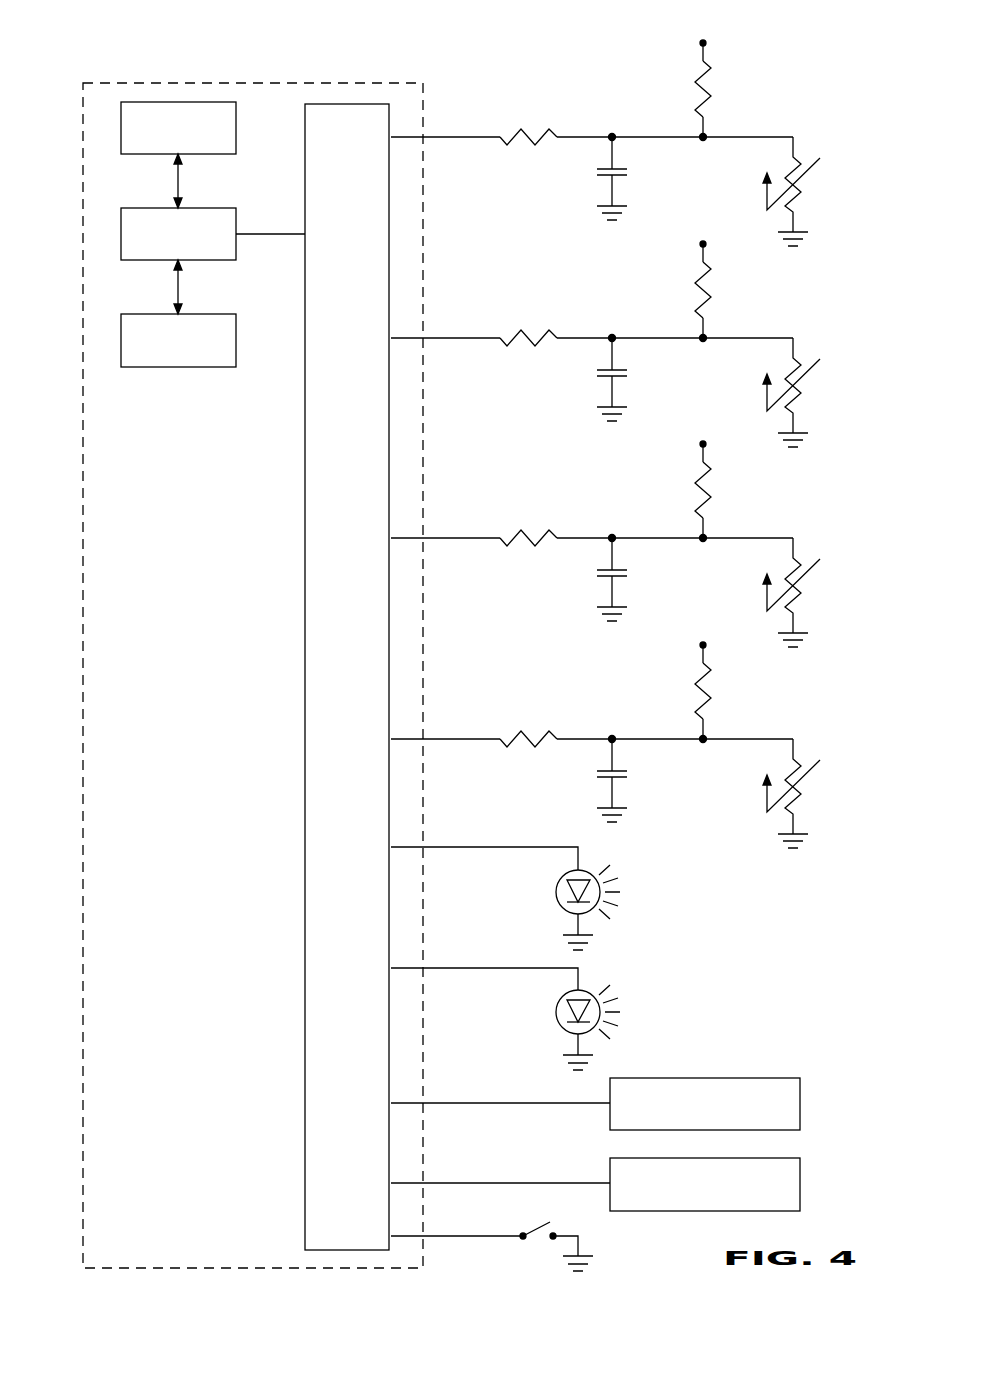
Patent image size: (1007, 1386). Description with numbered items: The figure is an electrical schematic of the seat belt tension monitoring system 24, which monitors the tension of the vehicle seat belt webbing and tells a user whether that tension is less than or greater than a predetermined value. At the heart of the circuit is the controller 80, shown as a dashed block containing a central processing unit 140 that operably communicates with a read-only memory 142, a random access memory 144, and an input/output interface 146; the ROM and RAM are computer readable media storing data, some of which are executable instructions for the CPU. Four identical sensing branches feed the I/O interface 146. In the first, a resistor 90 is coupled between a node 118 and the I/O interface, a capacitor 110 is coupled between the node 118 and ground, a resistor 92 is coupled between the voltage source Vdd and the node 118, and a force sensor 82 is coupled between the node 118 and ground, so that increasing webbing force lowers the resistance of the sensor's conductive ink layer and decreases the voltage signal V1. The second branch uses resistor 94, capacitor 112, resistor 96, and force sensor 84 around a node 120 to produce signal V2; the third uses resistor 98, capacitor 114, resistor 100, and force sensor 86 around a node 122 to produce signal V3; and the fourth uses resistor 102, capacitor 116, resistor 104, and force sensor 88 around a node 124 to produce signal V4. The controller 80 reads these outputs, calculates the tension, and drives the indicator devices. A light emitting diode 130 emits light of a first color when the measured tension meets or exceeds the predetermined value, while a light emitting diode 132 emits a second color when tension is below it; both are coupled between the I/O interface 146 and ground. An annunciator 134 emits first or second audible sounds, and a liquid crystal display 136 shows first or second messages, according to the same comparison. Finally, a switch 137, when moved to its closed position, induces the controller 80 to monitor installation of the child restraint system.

The seat belt tension monitoring system 24 is at (812, 90).
The controller 80 is at (408, 80).
The force sensor 82 is at (805, 210).
The force sensor 84 is at (805, 411).
The force sensor 86 is at (805, 611).
The force sensor 88 is at (805, 812).
The resistor 90 is at (521, 129).
The resistor 92 is at (711, 96).
The resistor 94 is at (521, 330).
The resistor 96 is at (711, 297).
The resistor 98 is at (521, 530).
The resistor 100 is at (711, 497).
The resistor 102 is at (521, 731).
The resistor 104 is at (711, 698).
The capacitor 110 is at (600, 177).
The capacitor 112 is at (600, 378).
The capacitor 114 is at (600, 578).
The capacitor 116 is at (600, 779).
The node 118 is at (613, 134).
The node 120 is at (613, 335).
The node 122 is at (613, 535).
The node 124 is at (613, 736).
The light emitting diode 130 is at (597, 878).
The light emitting diode 132 is at (597, 998).
The annunciator 134 is at (775, 1078).
The liquid crystal display 136 is at (775, 1158).
The switch 137 is at (550, 1222).
The central processing unit 140 is at (135, 208).
The read-only memory 142 is at (135, 102).
The random access memory 144 is at (135, 314).
The input/output interface 146 is at (327, 104).